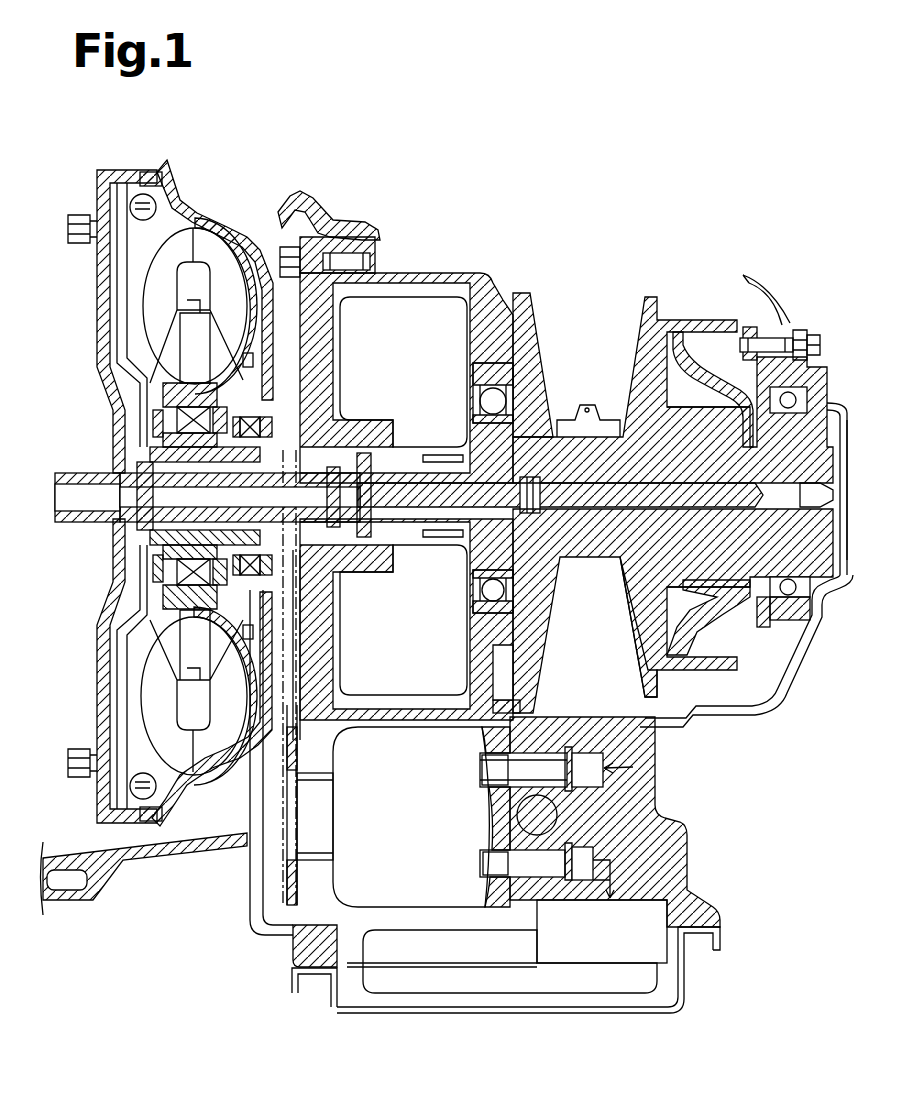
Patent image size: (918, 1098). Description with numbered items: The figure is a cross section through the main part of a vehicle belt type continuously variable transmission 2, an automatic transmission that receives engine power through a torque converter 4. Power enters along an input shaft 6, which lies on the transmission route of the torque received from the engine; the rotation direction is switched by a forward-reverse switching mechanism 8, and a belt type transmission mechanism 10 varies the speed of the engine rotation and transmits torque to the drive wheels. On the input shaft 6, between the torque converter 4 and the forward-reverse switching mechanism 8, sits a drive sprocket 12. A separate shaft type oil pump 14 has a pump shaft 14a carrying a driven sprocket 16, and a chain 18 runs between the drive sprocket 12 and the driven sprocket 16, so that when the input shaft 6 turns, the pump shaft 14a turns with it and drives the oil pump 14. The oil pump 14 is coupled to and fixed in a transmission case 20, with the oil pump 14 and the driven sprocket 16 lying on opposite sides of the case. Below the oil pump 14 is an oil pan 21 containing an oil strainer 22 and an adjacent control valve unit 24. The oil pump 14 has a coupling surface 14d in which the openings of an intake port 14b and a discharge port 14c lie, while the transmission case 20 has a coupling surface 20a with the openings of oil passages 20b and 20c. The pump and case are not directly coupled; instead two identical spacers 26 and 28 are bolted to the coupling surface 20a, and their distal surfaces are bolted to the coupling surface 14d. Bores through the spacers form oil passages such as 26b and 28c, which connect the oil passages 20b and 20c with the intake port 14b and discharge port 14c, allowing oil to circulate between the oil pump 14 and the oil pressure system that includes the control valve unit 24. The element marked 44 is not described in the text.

The vehicle belt type continuously variable transmission 2 is at (578, 169).
The torque converter 4 is at (153, 677).
The input shaft 6 is at (152, 515).
The forward-reverse switching mechanism 8 is at (422, 322).
The belt type transmission mechanism 10 is at (529, 292).
The drive sprocket 12 is at (290, 398).
The oil pump 14 is at (353, 887).
The pump shaft 14a is at (293, 810).
The intake port 14b is at (520, 773).
The discharge port 14c is at (497, 858).
The coupling surface 14d is at (527, 860).
The driven sprocket 16 is at (253, 887).
The chain 18 is at (297, 598).
The transmission case 20 is at (697, 830).
The coupling surface 20a is at (587, 758).
The oil passage 20b is at (590, 752).
The oil passage 20c is at (587, 865).
The oil pan 21 is at (658, 1015).
The oil strainer 22 is at (437, 980).
The control valve unit 24 is at (657, 952).
The spacer 26 is at (540, 752).
The oil passage 26b is at (480, 783).
The spacer 28 is at (527, 863).
The oil passage 28c is at (520, 870).
The roller 44 is at (548, 818).